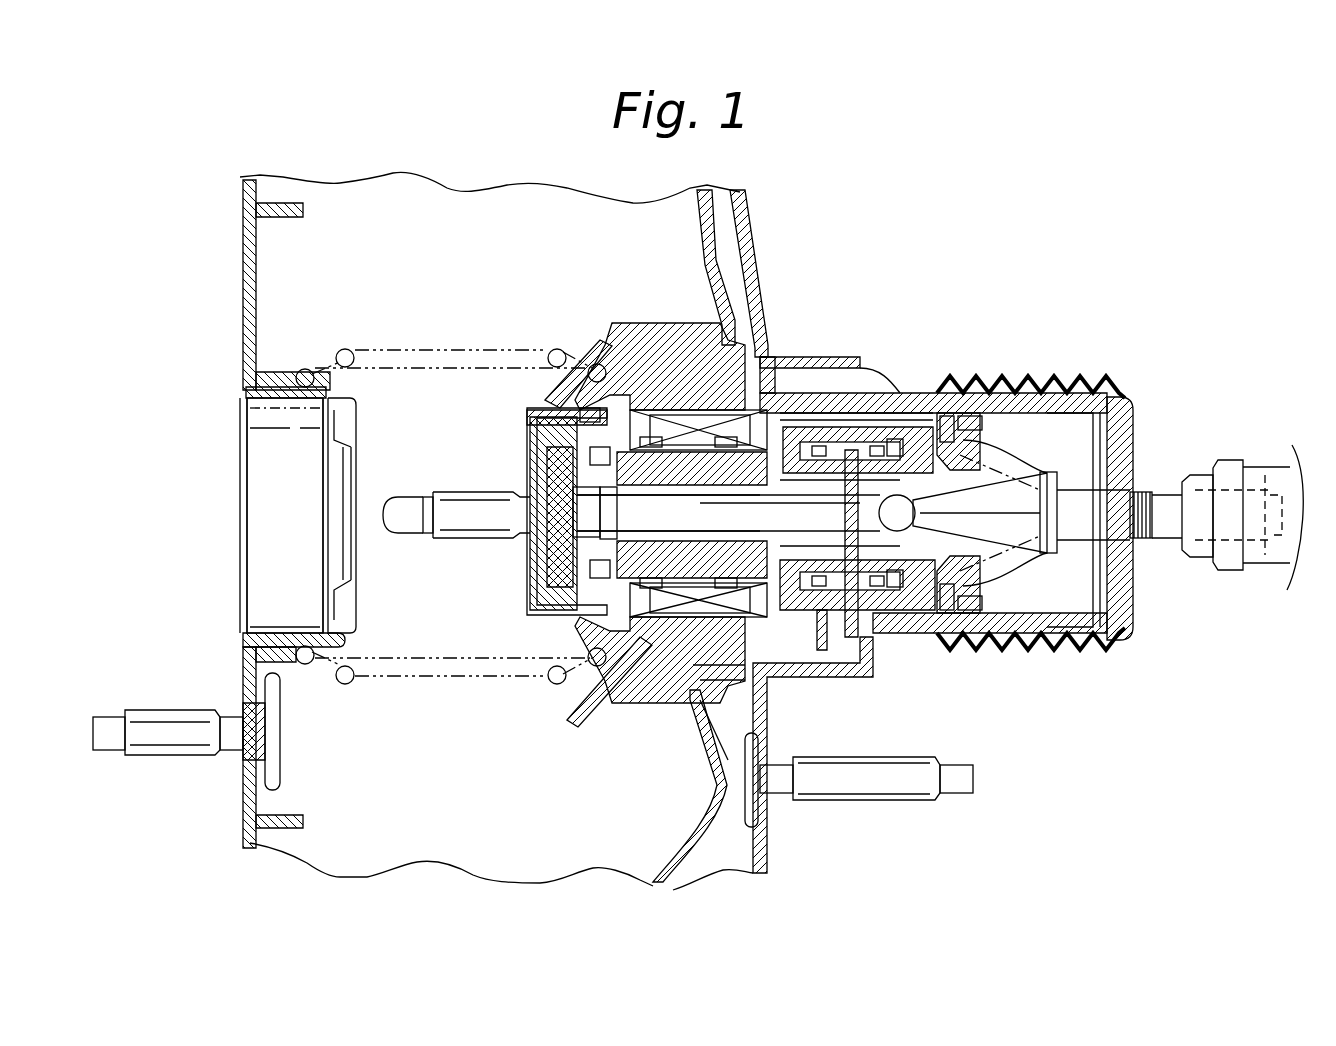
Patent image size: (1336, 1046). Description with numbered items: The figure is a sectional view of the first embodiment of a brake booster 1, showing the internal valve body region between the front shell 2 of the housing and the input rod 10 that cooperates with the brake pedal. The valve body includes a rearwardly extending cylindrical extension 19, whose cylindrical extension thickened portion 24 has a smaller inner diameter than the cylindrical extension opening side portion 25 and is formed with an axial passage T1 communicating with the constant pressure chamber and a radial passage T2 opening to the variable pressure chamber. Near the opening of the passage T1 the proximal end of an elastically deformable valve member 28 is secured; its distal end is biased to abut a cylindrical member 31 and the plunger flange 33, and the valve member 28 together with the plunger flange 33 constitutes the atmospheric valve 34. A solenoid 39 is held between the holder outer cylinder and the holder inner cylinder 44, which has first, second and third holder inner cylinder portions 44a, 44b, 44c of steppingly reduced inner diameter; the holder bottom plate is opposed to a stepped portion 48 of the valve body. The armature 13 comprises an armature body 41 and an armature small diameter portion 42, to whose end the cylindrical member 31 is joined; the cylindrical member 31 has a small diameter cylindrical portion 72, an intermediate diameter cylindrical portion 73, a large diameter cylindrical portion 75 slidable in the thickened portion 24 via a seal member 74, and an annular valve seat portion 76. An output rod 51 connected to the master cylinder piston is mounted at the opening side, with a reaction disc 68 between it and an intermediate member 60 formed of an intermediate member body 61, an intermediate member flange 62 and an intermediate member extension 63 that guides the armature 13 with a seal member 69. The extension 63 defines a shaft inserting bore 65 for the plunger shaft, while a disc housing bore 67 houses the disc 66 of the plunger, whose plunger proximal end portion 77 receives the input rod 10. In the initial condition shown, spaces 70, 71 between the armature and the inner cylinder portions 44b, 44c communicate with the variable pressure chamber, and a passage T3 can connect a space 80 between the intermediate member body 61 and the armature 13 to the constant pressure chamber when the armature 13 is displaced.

The booster 1 is at (1143, 235).
The front shell 2 is at (255, 195).
The input rod 10 is at (1282, 548).
The armature 13 is at (440, 545).
The cylindrical extension 19 is at (1055, 185).
The cylindrical extension thickened portion 24 is at (882, 375).
The cylindrical extension opening side portion 25 is at (1055, 375).
The valve member 28 is at (975, 642).
The cylindrical member 31 is at (958, 630).
The plunger flange 33 is at (962, 612).
The atmospheric valve 34 is at (1127, 560).
The solenoid 39 is at (608, 348).
The armature body 41 is at (577, 515).
The armature small diameter portion 42 is at (593, 530).
The holder inner cylinder 44 is at (595, 740).
The first holder inner cylinder portion 44a is at (693, 670).
The second holder inner cylinder portion 44b is at (713, 672).
The third holder inner cylinder portion 44c is at (702, 762).
The stepped portion 48 is at (787, 677).
The output rod 51 is at (393, 513).
The intermediate member 60 is at (400, 685).
The intermediate member body 61 is at (600, 575).
The intermediate member flange 62 is at (650, 590).
The intermediate member extension 63 is at (725, 600).
The shaft inserting bore 65 is at (720, 445).
The disc 66 is at (513, 493).
The disc housing bore 67 is at (580, 503).
The reaction disc 68 is at (550, 480).
The seal member 69 is at (575, 420).
The space 70 is at (560, 602).
The space 71 is at (615, 545).
The cylindrical member small diameter cylindrical portion 72 is at (773, 362).
The cylindrical member intermediate diameter cylindrical portion 73 is at (812, 420).
The seal member 74 is at (957, 630).
The cylindrical member large diameter cylindrical portion 75 is at (942, 400).
The valve seat portion 76 is at (950, 435).
The plunger proximal end portion 77 is at (885, 605).
The space 80 is at (560, 482).
The passage T1 is at (827, 435).
The passage T2 is at (848, 640).
The passage T3 is at (580, 412).